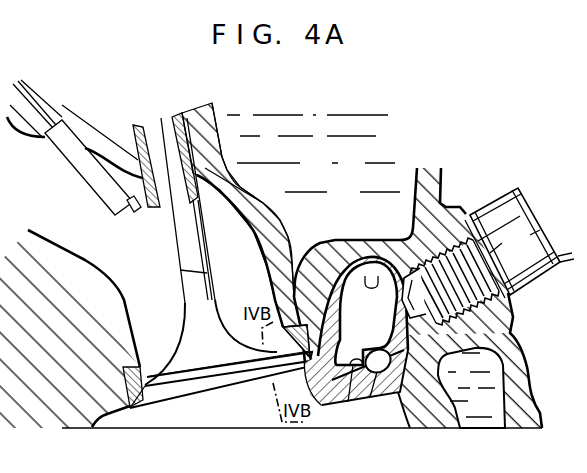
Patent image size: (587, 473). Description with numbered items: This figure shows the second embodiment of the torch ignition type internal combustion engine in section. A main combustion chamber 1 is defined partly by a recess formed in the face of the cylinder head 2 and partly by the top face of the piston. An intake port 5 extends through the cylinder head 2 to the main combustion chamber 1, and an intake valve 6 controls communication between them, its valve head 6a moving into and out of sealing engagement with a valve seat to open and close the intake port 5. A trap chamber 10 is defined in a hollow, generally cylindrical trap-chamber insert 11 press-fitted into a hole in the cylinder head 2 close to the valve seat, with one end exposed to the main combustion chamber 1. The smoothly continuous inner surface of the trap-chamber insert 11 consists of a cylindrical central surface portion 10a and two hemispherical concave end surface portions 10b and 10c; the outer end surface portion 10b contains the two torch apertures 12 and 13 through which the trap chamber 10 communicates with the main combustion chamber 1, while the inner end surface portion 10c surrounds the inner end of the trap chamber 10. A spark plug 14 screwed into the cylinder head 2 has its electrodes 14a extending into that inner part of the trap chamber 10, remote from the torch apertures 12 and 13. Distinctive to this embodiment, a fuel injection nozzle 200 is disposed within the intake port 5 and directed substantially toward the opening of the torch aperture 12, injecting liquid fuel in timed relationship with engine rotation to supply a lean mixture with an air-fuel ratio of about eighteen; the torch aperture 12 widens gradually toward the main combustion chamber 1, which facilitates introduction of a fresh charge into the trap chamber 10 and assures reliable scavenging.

The main combustion chamber 1 is at (227, 420).
The cylinder head 2 is at (100, 390).
The intake port 5 is at (104, 244).
The intake valve 6 is at (188, 327).
The valve head 6a is at (170, 385).
The trap chamber 10 is at (381, 327).
The cylindrical central surface portion 10a is at (501, 370).
The hemispherical end surface portion 10b is at (340, 390).
The hemispherical end surface portion 10c is at (405, 231).
The trap-chamber insert 11 is at (340, 273).
The torch aperture 12 is at (330, 385).
The torch aperture 13 is at (393, 378).
The spark plug 14 is at (495, 212).
The electrodes 14a is at (433, 327).
The fuel injection nozzle 200 is at (80, 163).